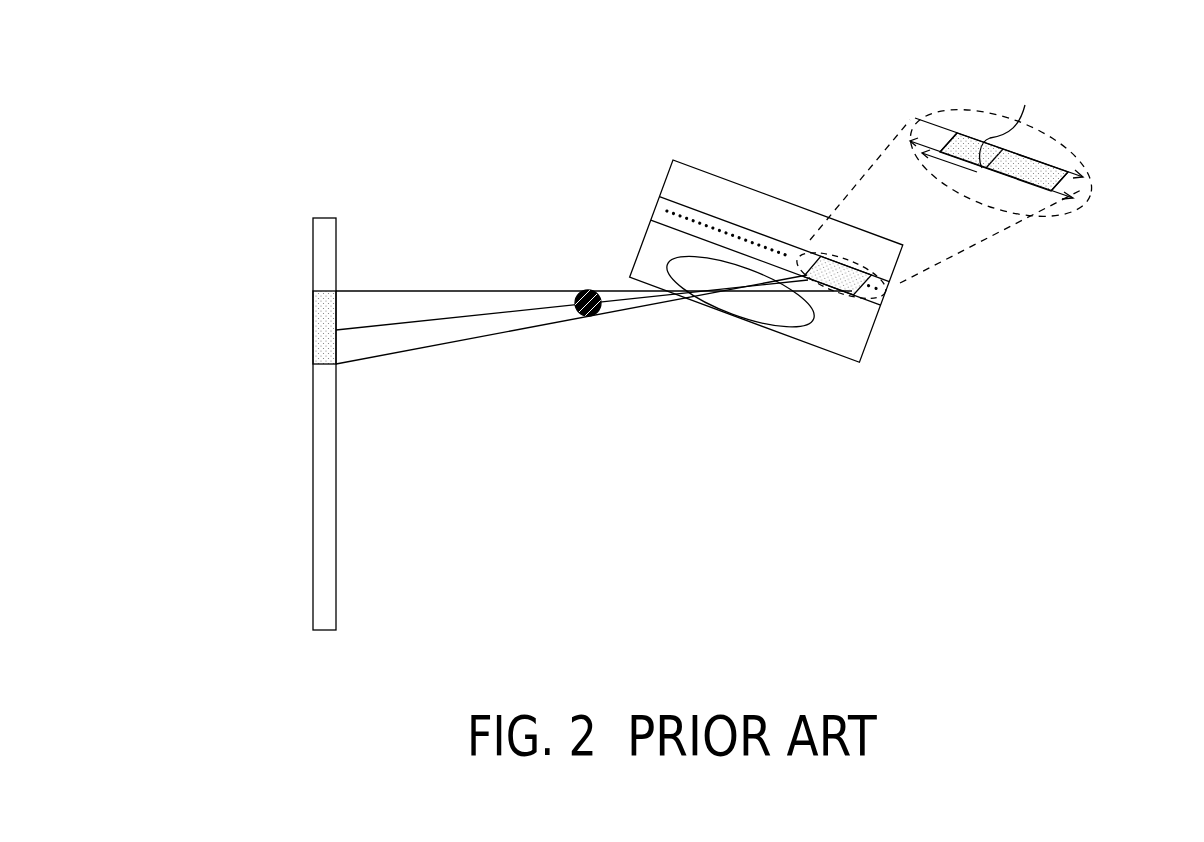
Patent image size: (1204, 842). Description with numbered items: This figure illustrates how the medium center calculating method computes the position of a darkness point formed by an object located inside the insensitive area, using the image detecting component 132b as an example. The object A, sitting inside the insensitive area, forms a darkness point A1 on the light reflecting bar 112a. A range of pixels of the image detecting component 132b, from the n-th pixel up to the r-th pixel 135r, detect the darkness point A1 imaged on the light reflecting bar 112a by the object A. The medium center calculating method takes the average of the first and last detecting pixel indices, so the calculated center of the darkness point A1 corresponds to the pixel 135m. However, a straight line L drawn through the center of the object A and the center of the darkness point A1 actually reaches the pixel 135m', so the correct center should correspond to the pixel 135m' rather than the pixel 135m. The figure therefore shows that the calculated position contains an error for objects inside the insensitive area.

The light reflecting bar 112a is at (322, 266).
The darkness point A1 is at (305, 327).
The object A is at (587, 290).
The straight line L is at (625, 305).
The image detecting component 132b is at (680, 177).
The (n+r)/2-th pixel 135m is at (1005, 131).
The pixel 135m' is at (1006, 131).
The r-th pixel 135r is at (1068, 200).